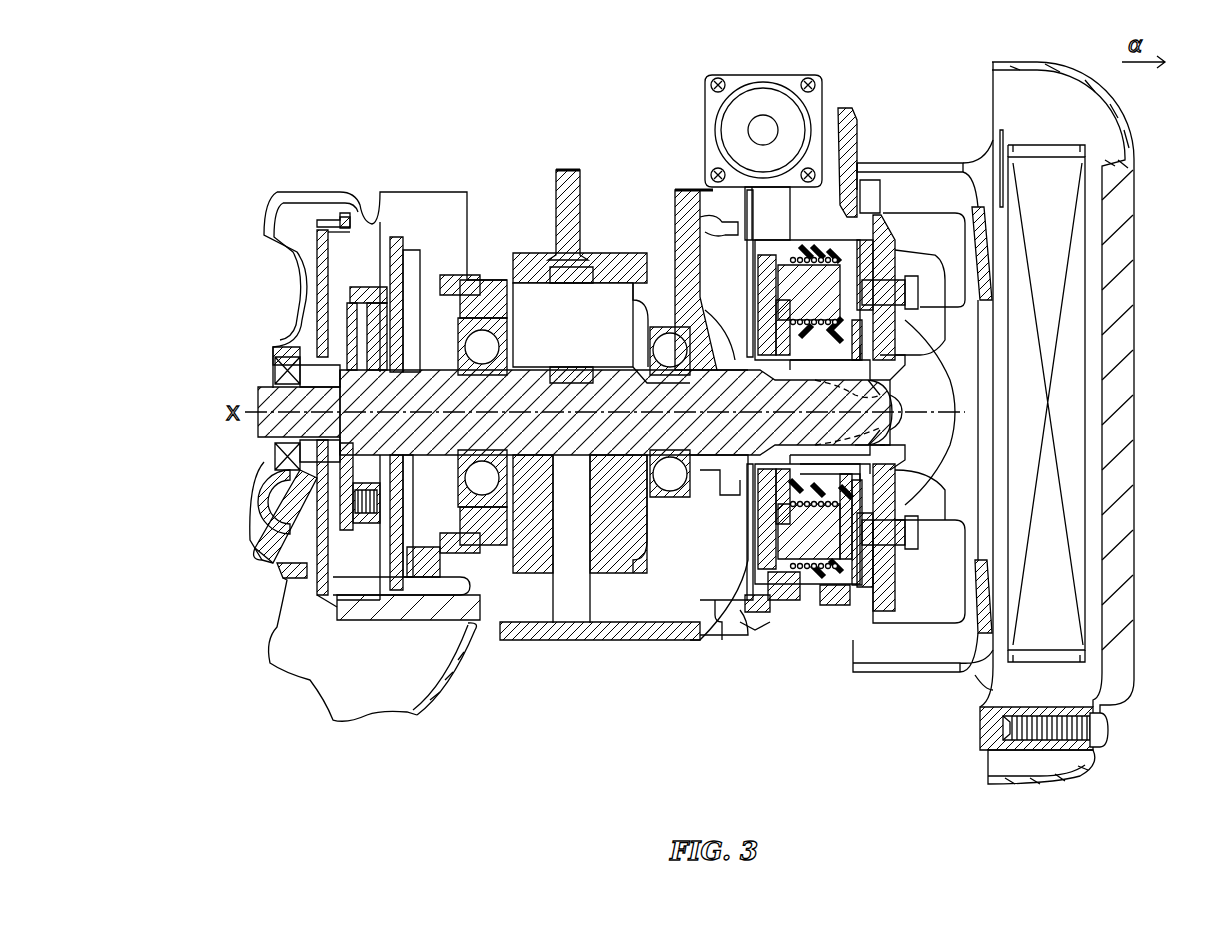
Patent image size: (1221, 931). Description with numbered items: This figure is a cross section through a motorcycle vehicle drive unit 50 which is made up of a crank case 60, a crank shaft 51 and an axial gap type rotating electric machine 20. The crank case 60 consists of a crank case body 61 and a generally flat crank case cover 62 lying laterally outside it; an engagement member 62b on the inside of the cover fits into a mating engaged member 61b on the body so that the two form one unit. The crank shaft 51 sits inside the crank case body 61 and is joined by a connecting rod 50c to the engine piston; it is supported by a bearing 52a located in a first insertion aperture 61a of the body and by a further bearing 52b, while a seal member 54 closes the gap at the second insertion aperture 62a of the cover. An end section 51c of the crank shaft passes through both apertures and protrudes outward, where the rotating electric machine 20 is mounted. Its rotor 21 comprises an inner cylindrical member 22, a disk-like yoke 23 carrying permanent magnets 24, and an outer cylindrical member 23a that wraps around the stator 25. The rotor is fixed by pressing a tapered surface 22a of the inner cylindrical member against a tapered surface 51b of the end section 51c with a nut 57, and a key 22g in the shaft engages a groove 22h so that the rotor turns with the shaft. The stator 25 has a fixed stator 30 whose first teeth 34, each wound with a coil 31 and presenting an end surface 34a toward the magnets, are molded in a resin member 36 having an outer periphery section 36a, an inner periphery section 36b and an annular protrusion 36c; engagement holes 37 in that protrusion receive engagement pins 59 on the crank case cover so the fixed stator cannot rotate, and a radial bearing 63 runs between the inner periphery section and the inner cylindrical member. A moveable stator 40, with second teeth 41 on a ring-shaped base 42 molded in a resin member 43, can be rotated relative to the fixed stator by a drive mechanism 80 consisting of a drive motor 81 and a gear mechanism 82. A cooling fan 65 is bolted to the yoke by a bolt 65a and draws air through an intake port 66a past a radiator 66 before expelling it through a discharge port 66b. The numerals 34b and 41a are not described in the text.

The axial gap type rotating electric machine 20 is at (906, 212).
The rotor 21 is at (907, 360).
The inner cylindrical member 22 is at (870, 362).
The tapered surface 22a is at (848, 470).
The key 22g is at (882, 424).
The groove 22h is at (882, 396).
The yoke 23 is at (885, 268).
The outer cylindrical member 23a is at (840, 612).
The permanent magnets 24 is at (866, 230).
The stator 25 is at (823, 394).
The fixed stator 30 is at (835, 236).
The coil 31 is at (860, 328).
The first teeth 34 is at (862, 530).
The end surface 34a is at (850, 541).
The clutch housing wall 34b is at (764, 286).
The resin member 36 is at (857, 618).
The outer periphery section 36a is at (850, 600).
The inner periphery section 36b is at (880, 605).
The annular protrusion 36c is at (782, 600).
The engagement holes 37 is at (765, 612).
The moveable stator 40 is at (786, 231).
The second teeth 41 is at (798, 610).
The inner race flange 41a is at (772, 312).
The base 42 is at (784, 620).
The resin member 43 is at (830, 600).
The vehicle drive unit 50 is at (421, 136).
The connecting rod 50c is at (562, 200).
The crank shaft 51 is at (556, 540).
The tapered surface 51b is at (870, 455).
The end section 51c is at (882, 440).
The bearing 52a is at (590, 600).
The bearing 52b is at (478, 627).
The seal member 54 is at (738, 497).
The nut 57 is at (898, 420).
The engagement pins 59 is at (720, 640).
The crank case 60 is at (626, 436).
The crank case body 61 is at (635, 640).
The first insertion aperture 61a is at (665, 352).
The engaged member 61b is at (686, 197).
The crank case cover 62 is at (690, 622).
The second insertion aperture 62a is at (705, 305).
The engagement member 62b is at (703, 218).
The radial bearing 63 is at (848, 480).
The cooling fan 65 is at (915, 545).
The bolt 65a is at (915, 292).
The radiator 66 is at (1043, 172).
The intake port 66a is at (1125, 408).
The discharge port 66b is at (978, 165).
The drive mechanism 80 is at (756, 135).
The drive motor 81 is at (762, 95).
The gear mechanism 82 is at (784, 212).